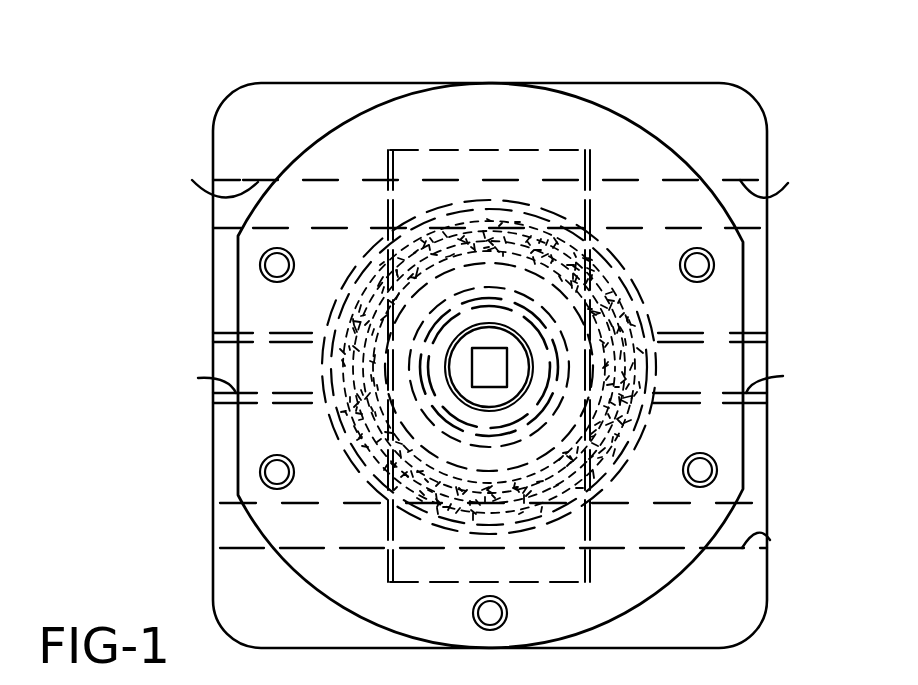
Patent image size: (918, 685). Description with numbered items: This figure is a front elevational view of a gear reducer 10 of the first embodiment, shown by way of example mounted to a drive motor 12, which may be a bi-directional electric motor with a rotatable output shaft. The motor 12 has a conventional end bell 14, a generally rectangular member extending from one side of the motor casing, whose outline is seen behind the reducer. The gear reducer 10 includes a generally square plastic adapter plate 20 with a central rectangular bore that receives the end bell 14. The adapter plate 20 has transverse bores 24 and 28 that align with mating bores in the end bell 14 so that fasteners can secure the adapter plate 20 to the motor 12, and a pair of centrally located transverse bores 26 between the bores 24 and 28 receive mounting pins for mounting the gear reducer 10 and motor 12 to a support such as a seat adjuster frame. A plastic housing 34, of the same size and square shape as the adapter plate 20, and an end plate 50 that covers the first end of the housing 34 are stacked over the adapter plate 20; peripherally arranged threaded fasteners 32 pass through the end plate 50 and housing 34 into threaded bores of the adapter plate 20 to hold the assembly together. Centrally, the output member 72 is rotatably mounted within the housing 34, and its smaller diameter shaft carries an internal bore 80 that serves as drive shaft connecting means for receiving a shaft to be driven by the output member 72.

The gear reducer 10 is at (370, 16).
The drive motor 12 is at (586, 100).
The end bell 14 is at (410, 160).
The adapter plate 20 is at (758, 58).
The housing 34 is at (490, 365).
The end plate 50 is at (490, 365).
The transverse bores 24 is at (192, 180).
The transverse bores 26 is at (198, 378).
The transverse bores 28 is at (770, 540).
The threaded fasteners 32 is at (264, 262).
The output member 72 is at (323, 412).
The internal bore 80 is at (491, 378).